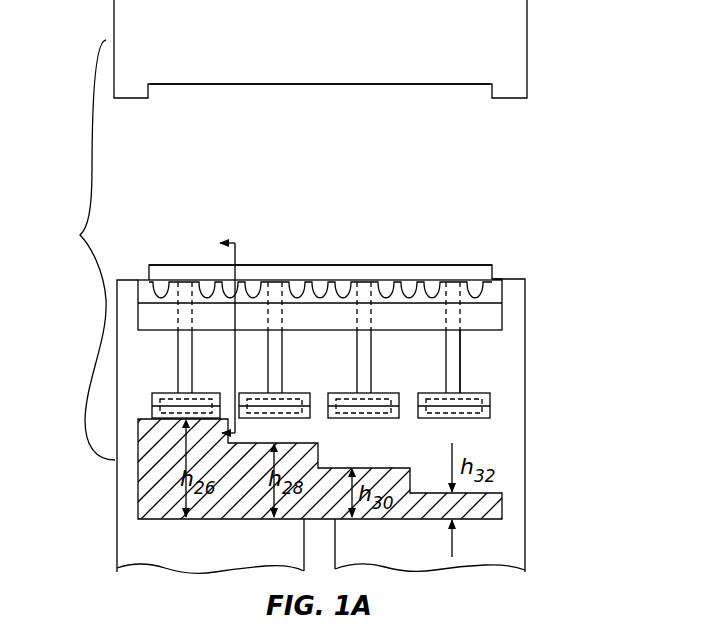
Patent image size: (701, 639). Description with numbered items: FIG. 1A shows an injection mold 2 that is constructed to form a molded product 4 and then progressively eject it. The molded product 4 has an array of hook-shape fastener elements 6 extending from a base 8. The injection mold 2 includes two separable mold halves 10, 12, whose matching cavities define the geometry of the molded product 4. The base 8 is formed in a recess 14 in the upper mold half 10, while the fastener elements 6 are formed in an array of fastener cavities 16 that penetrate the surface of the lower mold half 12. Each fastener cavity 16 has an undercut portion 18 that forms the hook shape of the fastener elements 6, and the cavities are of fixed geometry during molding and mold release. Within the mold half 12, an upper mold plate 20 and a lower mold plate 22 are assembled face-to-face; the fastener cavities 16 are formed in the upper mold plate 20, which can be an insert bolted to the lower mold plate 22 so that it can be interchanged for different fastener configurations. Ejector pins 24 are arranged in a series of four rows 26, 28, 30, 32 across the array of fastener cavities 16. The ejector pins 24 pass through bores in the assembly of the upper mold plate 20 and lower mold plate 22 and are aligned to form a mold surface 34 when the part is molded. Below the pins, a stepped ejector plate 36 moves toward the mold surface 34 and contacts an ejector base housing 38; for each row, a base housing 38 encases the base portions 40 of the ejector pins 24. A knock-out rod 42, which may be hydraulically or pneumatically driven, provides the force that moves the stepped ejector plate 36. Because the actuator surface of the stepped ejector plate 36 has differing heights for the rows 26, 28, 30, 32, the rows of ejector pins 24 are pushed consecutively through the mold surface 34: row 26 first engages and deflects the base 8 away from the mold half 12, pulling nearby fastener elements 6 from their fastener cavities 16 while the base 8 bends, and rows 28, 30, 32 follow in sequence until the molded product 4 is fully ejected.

The mold half 10 is at (337, 44).
The recess 14 is at (410, 85).
The injection mold 2 is at (148, 250).
The molded product 4 is at (480, 265).
The base 8 is at (495, 269).
The hook-shape fastener elements 6 is at (301, 290).
The fastener cavities 16 is at (367, 299).
The undercut portion 18 is at (487, 292).
The upper mold plate 20 is at (137, 298).
The lower mold plate 22 is at (137, 317).
The mold half 12 is at (526, 347).
The ejector pins 24 is at (463, 357).
The row of ejector pins 26 is at (176, 366).
The row of ejector pins 28 is at (286, 353).
The row of ejector pins 30 is at (355, 380).
The row of ejector pins 32 is at (444, 363).
The mold surface 34 is at (117, 287).
The stepped ejector plate 36 is at (502, 505).
The ejector base housing 38 is at (492, 393).
The base portions 40 is at (490, 401).
The knock-out rod 42 is at (335, 545).